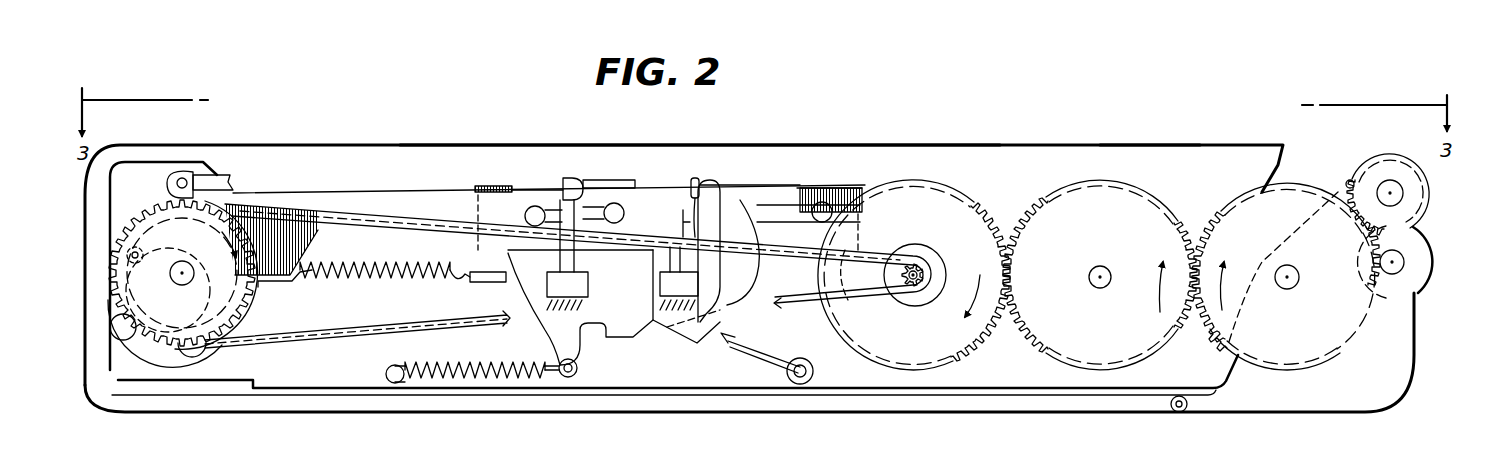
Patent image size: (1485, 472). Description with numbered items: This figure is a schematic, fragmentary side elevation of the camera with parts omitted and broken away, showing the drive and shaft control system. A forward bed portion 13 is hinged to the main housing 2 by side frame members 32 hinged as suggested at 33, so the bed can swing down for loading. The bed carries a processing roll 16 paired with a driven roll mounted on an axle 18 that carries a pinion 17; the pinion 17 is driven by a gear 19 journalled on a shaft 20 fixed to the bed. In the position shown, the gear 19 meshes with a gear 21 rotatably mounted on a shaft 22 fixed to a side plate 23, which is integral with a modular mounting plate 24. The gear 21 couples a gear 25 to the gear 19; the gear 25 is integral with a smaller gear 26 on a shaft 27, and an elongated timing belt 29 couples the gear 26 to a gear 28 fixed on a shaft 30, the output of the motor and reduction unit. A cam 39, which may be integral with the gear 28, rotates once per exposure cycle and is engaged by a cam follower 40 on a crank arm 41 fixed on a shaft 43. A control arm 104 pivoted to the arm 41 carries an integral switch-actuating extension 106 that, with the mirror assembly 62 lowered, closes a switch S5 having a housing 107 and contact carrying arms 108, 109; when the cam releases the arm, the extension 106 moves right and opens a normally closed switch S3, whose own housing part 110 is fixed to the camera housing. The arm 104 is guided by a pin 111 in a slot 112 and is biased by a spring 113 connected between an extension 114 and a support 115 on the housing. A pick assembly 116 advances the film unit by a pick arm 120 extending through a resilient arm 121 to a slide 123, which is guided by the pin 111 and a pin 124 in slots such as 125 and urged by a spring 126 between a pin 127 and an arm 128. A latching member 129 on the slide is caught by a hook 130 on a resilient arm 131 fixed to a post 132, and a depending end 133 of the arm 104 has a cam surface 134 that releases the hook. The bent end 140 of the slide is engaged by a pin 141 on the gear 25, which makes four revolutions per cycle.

The main housing 2 is at (338, 417).
The forward bed portion 13 is at (1365, 416).
The processing roll 16 is at (1418, 292).
The pinion 17 is at (1348, 186).
The axle 18 is at (1392, 180).
The gear 19 is at (1350, 330).
The shaft 20 is at (1296, 285).
The gear 21 is at (1160, 332).
The shaft 22 is at (1110, 281).
The side plate 23 is at (1147, 162).
The modular mounting plate 24 is at (995, 143).
The gear 25 is at (978, 330).
The gear 26 is at (925, 265).
The shaft 27 is at (909, 292).
The gear 28 is at (238, 308).
The timing belt 29 is at (866, 262).
The shaft 30 is at (195, 280).
The side frame members 32 is at (1265, 397).
The hinge 33 is at (1183, 412).
The cam 39 is at (175, 290).
The cam follower 40 is at (133, 342).
The crank arm 41 is at (182, 368).
The shaft 43 is at (220, 358).
The mirror assembly 62 is at (226, 168).
The control arm 104 is at (429, 188).
The switch-actuating extension 106 is at (607, 180).
The switch housing 107 is at (588, 284).
The contact carrying arm 108 is at (500, 287).
The contact carrying arm 109 is at (578, 265).
The hammer 110 is at (665, 288).
The pin 111 is at (618, 216).
The slot 112 is at (538, 208).
The spring 113 is at (388, 288).
The extension 114 is at (272, 255).
The support 115 is at (475, 285).
The pick assembly 116 is at (770, 178).
The pick arm 120 is at (292, 283).
The resilient arm 121 is at (320, 265).
The slide 123 is at (802, 188).
The pin 124 is at (807, 190).
The slot 125 is at (742, 212).
The spring 126 is at (490, 364).
The pin 127 is at (395, 365).
The arm 128 is at (577, 353).
The latching member 129 is at (618, 330).
The hook 130 is at (752, 336).
The resilient arm 131 is at (765, 362).
The post 132 is at (811, 366).
The depending end 133 is at (713, 286).
The cam surface 134 is at (698, 348).
The end of slide 140 is at (862, 200).
The pin 141 is at (863, 275).
The switch S3 is at (700, 174).
The switch S5 is at (559, 175).